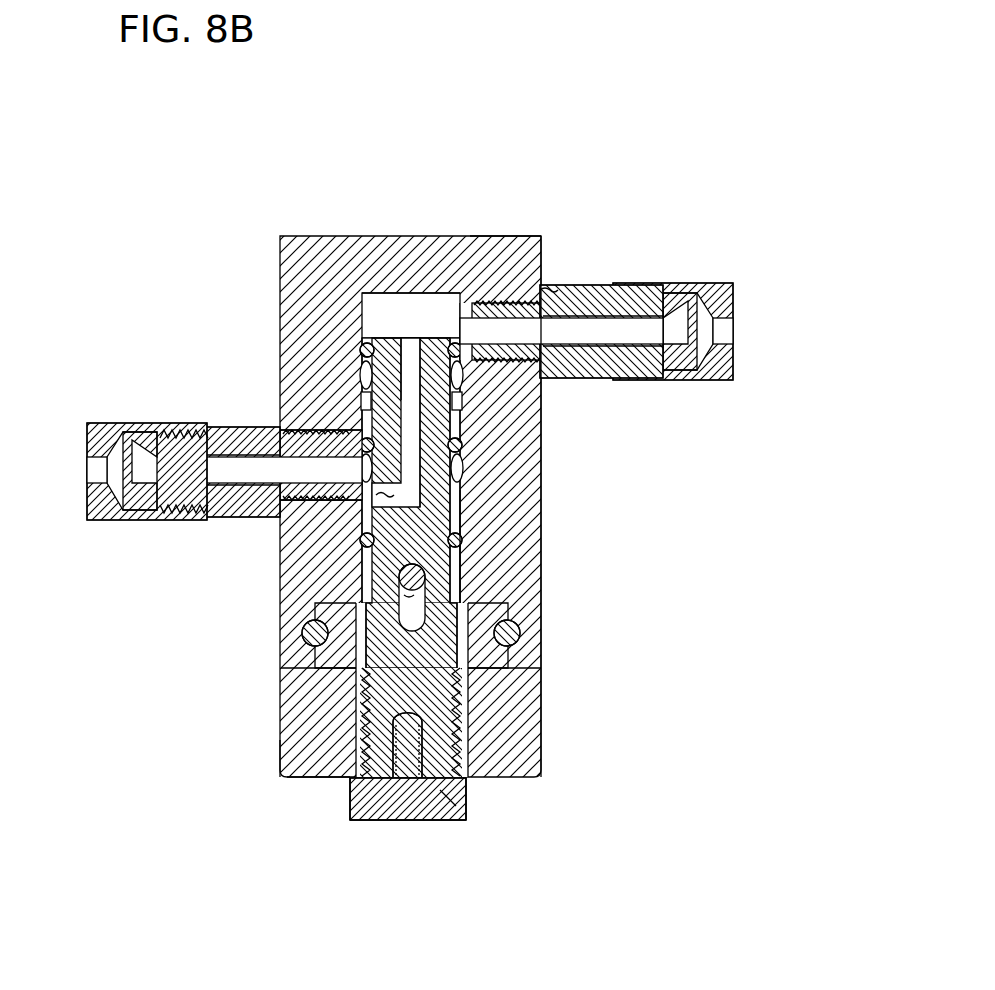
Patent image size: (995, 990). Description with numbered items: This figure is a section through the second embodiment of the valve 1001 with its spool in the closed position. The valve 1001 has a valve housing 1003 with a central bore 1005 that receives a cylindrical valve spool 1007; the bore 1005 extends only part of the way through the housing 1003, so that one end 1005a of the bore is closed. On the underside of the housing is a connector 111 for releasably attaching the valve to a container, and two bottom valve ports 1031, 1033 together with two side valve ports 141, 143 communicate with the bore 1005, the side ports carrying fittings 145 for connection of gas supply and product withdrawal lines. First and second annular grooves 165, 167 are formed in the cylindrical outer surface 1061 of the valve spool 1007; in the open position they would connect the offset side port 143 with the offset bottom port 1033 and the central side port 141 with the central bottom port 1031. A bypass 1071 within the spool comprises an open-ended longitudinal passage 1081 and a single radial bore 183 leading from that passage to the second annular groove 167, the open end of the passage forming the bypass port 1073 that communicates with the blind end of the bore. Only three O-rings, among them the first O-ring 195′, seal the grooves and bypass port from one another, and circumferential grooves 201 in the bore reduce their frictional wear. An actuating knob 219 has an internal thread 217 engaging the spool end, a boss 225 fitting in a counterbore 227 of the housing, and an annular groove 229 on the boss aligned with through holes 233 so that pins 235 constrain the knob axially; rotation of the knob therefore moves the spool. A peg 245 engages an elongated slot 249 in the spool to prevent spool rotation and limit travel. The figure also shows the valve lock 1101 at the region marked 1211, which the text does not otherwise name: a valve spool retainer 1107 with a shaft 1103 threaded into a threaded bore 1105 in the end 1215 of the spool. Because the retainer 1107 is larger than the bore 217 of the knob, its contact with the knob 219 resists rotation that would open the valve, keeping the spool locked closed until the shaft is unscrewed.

The valve 1001 is at (575, 133).
The valve housing 1003 is at (281, 588).
The central bore 1005 is at (380, 300).
The closed end of the bore 1005a is at (478, 236).
The valve spool 1007 is at (463, 815).
The central bottom valve port 1031 is at (372, 393).
The offset bottom valve port 1033 is at (462, 415).
The outer surface of the valve spool 1061 is at (361, 296).
The bypass 1071 is at (403, 405).
The bypass port 1073 is at (428, 335).
The longitudinal passage 1081 is at (290, 428).
The valve lock 1101 is at (464, 830).
The shaft 1103 is at (392, 780).
The threaded bore 1105 is at (443, 822).
The valve spool retainer 1107 is at (450, 822).
The lower body bottom 1211 is at (281, 796).
The end of the valve spool 1215 is at (350, 812).
The connector 111 is at (567, 410).
The central side port 141 is at (264, 468).
The offset side port 143 is at (548, 290).
The fittings 145 is at (96, 423).
The first annular groove 165 is at (411, 357).
The second annular groove 167 is at (541, 503).
The radial bore 183 is at (283, 563).
The first O-ring 195′ is at (462, 540).
The circumferential grooves 201 is at (363, 345).
The internal thread 217 is at (472, 700).
The actuating knob 219 is at (283, 755).
The boss 225 is at (472, 665).
The counterbore 227 is at (508, 631).
The annular groove 229 is at (312, 622).
The through holes 233 is at (303, 636).
The pins 235 is at (302, 625).
The peg 245 is at (425, 582).
The elongated slot 249 is at (470, 606).